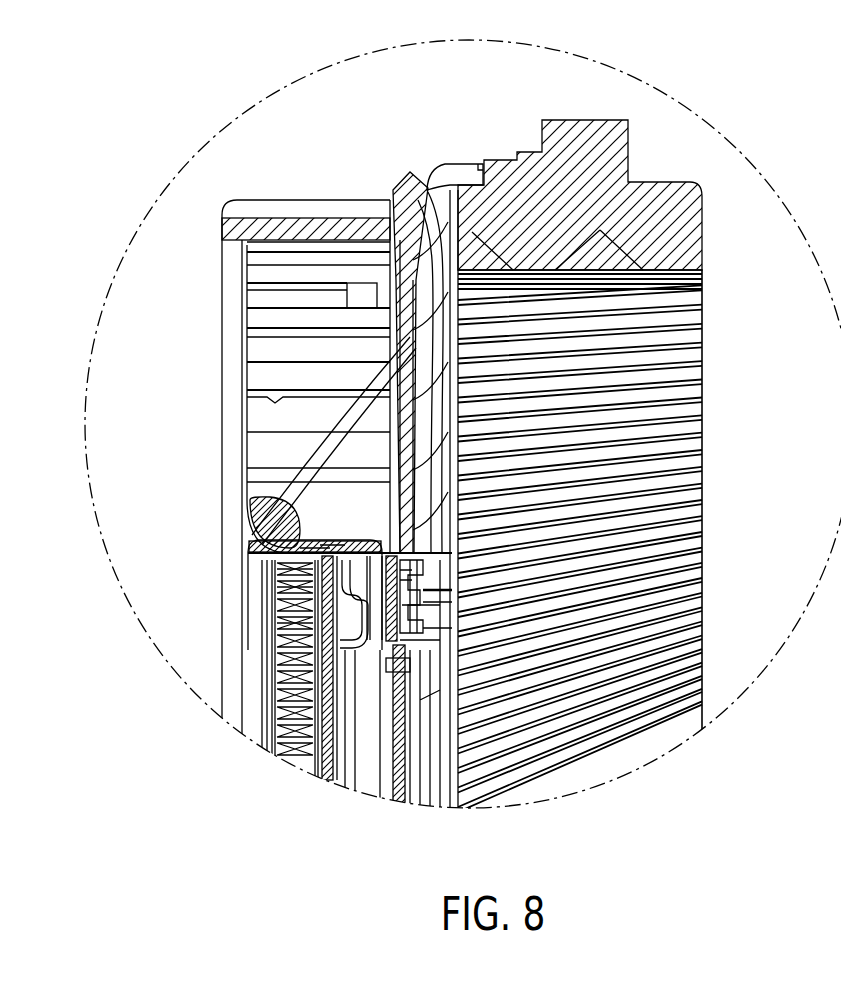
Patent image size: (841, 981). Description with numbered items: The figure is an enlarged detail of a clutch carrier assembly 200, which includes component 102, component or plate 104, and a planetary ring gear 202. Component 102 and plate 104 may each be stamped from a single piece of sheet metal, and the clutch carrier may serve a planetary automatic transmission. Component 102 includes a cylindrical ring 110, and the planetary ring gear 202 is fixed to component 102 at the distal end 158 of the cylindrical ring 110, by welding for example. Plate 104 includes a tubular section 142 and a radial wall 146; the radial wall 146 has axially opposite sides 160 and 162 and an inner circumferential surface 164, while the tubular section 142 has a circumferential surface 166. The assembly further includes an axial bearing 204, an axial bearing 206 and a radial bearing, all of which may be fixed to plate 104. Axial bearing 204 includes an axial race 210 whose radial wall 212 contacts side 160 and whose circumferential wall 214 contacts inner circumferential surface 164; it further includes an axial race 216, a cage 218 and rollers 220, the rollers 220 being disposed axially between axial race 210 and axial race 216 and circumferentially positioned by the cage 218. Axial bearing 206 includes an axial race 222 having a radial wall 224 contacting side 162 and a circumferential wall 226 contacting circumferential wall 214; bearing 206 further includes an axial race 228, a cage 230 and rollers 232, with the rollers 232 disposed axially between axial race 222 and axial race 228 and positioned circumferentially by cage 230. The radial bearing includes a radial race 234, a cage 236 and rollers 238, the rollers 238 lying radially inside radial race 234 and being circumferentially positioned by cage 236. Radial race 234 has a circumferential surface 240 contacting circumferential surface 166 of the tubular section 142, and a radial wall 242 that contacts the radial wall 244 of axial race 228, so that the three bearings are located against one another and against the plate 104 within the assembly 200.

The clutch carrier assembly 200 is at (284, 100).
The component 102 is at (268, 224).
The plate 104 is at (315, 405).
The cylindrical ring 110 is at (441, 182).
The distal end 158 is at (479, 166).
The planetary ring gear 202 is at (622, 178).
The axial bearing 204 is at (700, 480).
The axial bearing 206 is at (432, 600).
The axial race 210 is at (420, 582).
The radial wall 212 is at (426, 592).
The axial race 216 is at (432, 600).
The axial race 222 is at (410, 578).
The radial wall 224 is at (414, 586).
The cage 218 is at (405, 642).
The rollers 220 is at (415, 605).
The radial race 234 is at (262, 568).
The cage 236 is at (270, 585).
The rollers 238 is at (282, 602).
The radial wall 244 is at (287, 632).
The radial wall 146 is at (300, 645).
The circumferential surface 166 is at (266, 560).
The circumferential surface 240 is at (300, 540).
The tubular section 142 is at (318, 552).
The radial wall 242 is at (335, 548).
The side 162 is at (310, 728).
The inner circumferential surface 164 is at (382, 648).
The side 160 is at (388, 645).
The circumferential wall 226 is at (396, 690).
The circumferential wall 214 is at (430, 760).
The axial race 228 is at (346, 562).
The rollers 232 is at (352, 556).
The cage 230 is at (368, 556).